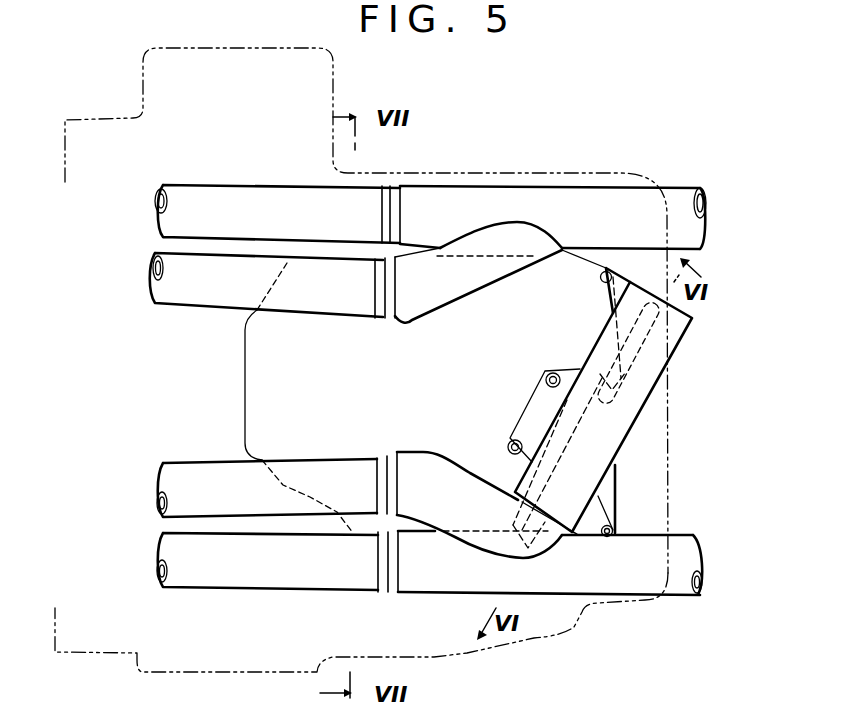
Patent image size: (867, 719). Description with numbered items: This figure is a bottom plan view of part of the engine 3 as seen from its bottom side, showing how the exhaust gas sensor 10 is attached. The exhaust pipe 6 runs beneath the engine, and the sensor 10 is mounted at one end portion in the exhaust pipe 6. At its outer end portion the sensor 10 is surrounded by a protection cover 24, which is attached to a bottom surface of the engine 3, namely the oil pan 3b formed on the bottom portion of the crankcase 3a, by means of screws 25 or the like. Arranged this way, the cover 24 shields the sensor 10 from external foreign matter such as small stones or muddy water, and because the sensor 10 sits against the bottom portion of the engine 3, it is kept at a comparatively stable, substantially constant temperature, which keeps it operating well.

The engine 3 is at (104, 110).
The crankcase 3a is at (541, 612).
The oil pan 3b is at (611, 494).
The exhaust pipe 6 is at (466, 197).
The exhaust gas sensor 10 is at (612, 416).
The protection cover 24 is at (685, 331).
The screws 25 is at (532, 416).